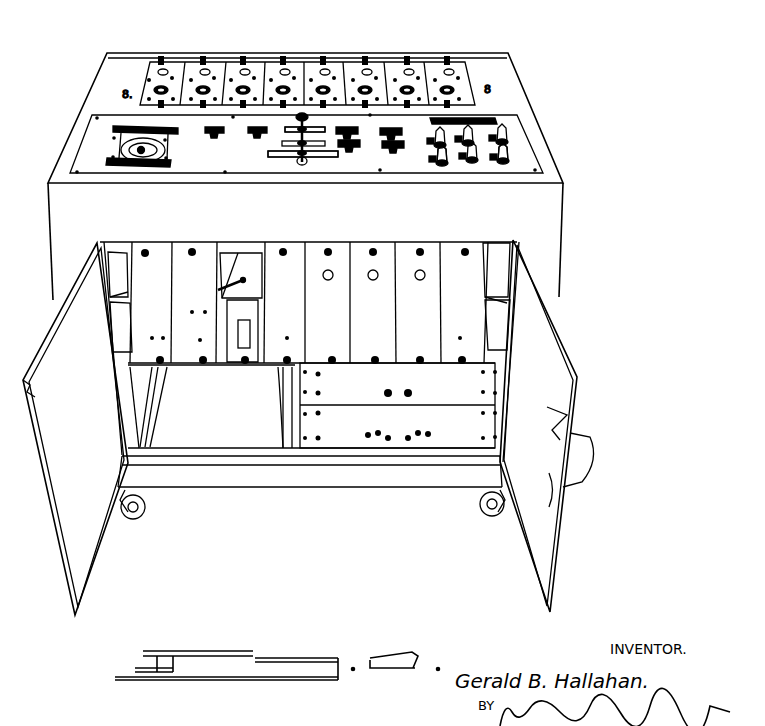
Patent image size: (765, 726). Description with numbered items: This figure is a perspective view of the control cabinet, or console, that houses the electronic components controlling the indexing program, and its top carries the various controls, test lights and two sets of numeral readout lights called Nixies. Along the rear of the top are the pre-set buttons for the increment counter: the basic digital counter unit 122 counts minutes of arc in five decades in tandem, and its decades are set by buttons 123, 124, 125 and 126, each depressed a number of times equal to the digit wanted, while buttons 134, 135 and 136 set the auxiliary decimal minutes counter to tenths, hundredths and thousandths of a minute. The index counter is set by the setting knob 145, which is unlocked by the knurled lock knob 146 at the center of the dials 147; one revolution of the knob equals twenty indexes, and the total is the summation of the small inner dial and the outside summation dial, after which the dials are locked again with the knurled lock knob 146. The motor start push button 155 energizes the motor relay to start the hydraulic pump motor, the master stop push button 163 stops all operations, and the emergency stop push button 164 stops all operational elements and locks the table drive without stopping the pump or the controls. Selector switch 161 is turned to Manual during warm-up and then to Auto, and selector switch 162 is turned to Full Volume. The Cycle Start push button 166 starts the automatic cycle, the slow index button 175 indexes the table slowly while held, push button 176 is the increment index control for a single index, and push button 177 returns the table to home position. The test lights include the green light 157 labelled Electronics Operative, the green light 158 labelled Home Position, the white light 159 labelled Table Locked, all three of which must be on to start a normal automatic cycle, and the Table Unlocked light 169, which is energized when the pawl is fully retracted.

The digital counter unit 122 is at (161, 88).
The button 126 is at (203, 88).
The button 125 is at (243, 88).
The button 124 is at (283, 88).
The button 123 is at (324, 88).
The button 134 is at (366, 88).
The button 135 is at (408, 88).
The button 136 is at (448, 88).
The knurled lock knob 146 is at (114, 130).
The setting knob 145 is at (123, 151).
The dials 147 is at (108, 162).
The master stop push button 163 is at (213, 138).
The motor start push button 155 is at (253, 137).
The emergency stop push button 164 is at (302, 114).
The selector switch 161 is at (291, 152).
The selector switch 162 is at (300, 153).
The push button 176 is at (350, 136).
The slow index button 175 is at (354, 149).
The push button 177 is at (402, 141).
The Cycle Start push button 166 is at (398, 150).
The green light 157 is at (468, 118).
The green light 158 is at (506, 130).
The Table Unlocked light 169 is at (500, 164).
The white light 159 is at (444, 166).